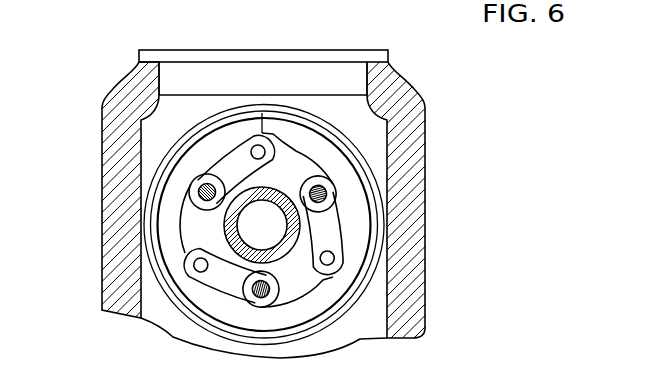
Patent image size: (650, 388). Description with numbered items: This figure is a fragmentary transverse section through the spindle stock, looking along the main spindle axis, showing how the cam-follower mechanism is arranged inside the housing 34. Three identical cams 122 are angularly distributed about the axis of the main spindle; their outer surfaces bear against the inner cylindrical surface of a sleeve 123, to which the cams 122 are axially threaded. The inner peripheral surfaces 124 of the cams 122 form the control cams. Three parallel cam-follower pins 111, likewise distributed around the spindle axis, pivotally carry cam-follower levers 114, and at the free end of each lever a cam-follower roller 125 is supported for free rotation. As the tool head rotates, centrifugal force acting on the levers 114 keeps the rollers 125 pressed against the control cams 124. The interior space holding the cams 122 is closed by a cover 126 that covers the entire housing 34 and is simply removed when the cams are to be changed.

The housing 34 is at (125, 105).
The cam-follower pins 111 is at (200, 187).
The cam-follower levers 114 is at (216, 163).
The cams 122 is at (333, 153).
The sleeve 123 is at (390, 100).
The inner peripheral surfaces 124 is at (295, 150).
The cam-follower rollers 125 is at (252, 140).
The cover 126 is at (331, 56).